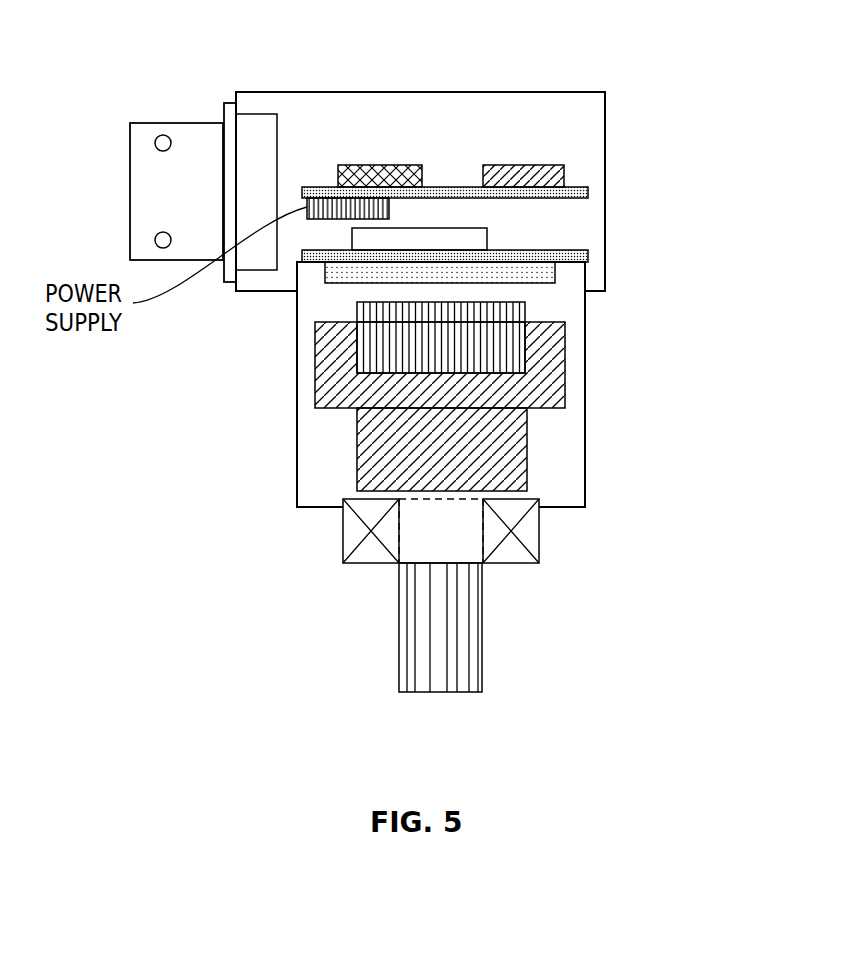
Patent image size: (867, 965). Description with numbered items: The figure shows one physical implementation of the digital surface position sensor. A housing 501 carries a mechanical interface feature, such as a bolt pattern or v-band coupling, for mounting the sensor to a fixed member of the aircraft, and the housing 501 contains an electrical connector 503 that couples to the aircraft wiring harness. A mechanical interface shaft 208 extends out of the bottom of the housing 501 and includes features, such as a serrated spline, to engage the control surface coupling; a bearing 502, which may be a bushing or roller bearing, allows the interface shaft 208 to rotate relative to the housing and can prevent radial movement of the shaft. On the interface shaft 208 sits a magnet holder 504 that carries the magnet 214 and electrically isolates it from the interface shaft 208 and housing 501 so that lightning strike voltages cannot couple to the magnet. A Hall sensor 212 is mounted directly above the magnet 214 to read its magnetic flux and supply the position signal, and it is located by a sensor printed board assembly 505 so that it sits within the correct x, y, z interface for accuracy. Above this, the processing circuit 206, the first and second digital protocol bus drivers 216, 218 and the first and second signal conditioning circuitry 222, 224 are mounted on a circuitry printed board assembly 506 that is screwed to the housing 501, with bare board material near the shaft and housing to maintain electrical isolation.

The electrical connector 503 is at (178, 137).
The first signal conditioning circuitry 222 is at (367, 105).
The second signal conditioning circuitry 224 is at (380, 165).
The first digital protocol bus driver 216 is at (546, 105).
The second digital protocol bus driver 218 is at (527, 165).
The circuitry printed board assembly 506 is at (588, 192).
The processing circuit 206 is at (475, 238).
The sensor printed board assembly 505 is at (588, 262).
The Hall sensor 212 is at (325, 272).
The magnet 214 is at (522, 308).
The magnet holder 504 is at (523, 380).
The housing 501 is at (562, 475).
The bearing 502 is at (528, 533).
The mechanical interface shaft 208 is at (455, 610).